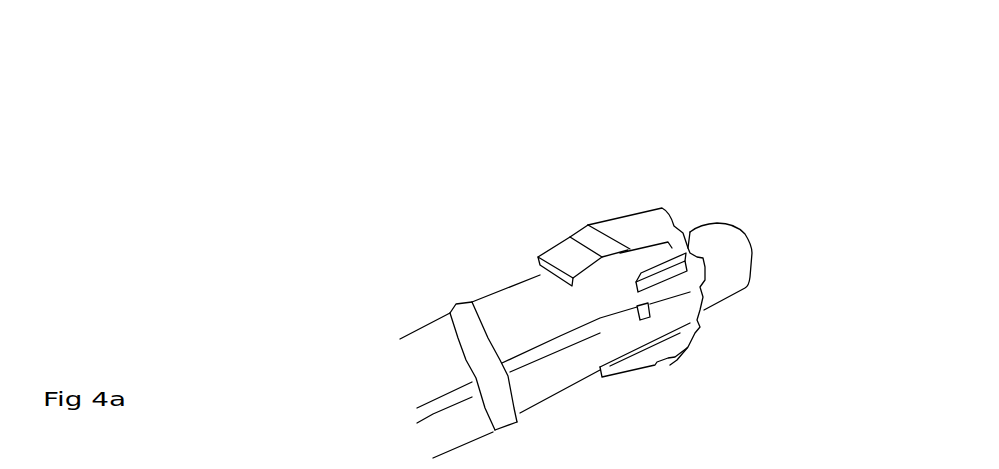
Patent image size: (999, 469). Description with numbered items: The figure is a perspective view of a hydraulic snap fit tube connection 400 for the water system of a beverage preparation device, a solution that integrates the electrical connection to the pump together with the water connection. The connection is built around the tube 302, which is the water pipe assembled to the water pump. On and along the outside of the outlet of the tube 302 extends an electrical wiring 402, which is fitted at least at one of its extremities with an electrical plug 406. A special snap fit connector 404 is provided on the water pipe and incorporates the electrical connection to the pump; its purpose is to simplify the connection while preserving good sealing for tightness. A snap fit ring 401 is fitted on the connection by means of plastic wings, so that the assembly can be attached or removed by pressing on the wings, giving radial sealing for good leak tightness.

The hydraulic snap fit tube connection 400 is at (465, 33).
The snap fit ring 401 is at (525, 372).
The snap fit connector 404 is at (592, 236).
The tube 302 is at (727, 250).
The electrical plug 406 is at (697, 279).
The electrical wiring 402 is at (550, 350).